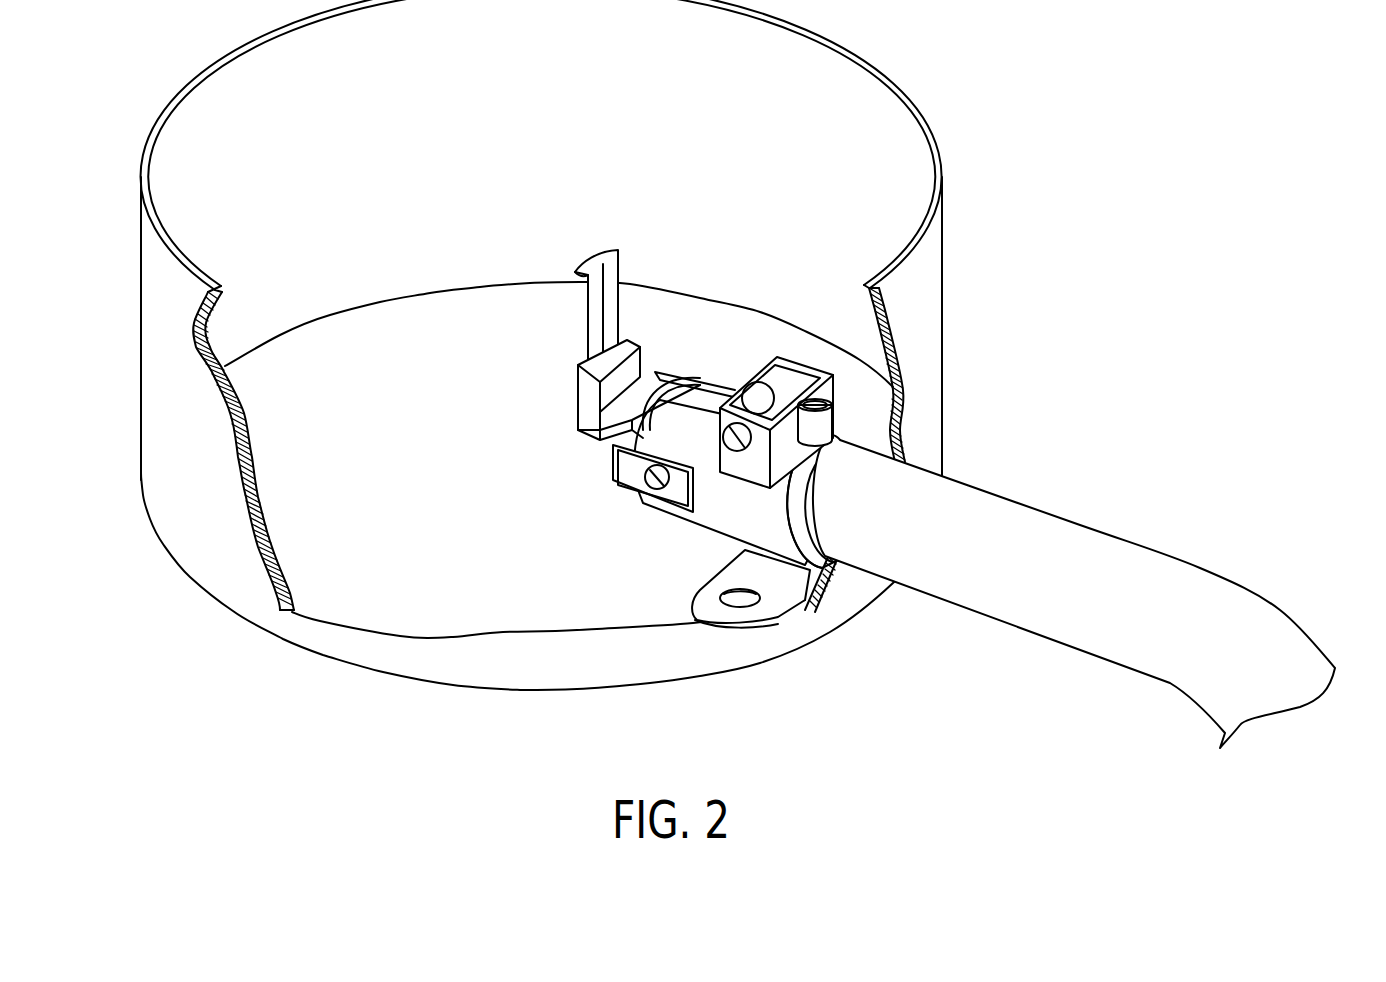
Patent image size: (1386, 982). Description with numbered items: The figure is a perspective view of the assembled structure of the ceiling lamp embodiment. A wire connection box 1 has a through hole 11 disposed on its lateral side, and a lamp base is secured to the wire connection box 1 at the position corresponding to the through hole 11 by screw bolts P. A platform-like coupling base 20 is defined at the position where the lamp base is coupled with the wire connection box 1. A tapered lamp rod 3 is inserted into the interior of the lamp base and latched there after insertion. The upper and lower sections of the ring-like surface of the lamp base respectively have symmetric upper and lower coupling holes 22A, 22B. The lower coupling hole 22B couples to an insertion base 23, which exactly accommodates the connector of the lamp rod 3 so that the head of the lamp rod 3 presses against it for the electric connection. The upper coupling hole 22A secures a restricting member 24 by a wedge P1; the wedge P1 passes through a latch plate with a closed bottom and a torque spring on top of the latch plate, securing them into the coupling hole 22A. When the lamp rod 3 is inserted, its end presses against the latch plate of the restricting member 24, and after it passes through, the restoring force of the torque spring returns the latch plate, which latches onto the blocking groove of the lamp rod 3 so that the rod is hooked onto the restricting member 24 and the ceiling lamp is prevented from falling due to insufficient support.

The wire connection box 1 is at (917, 315).
The through hole 11 is at (903, 457).
The lamp rod 3 is at (1068, 598).
The coupling base 20 is at (783, 575).
The screw bolts P is at (739, 603).
The wedge P1 is at (717, 397).
The upper coupling hole 22A is at (690, 401).
The lower coupling hole 22B is at (657, 493).
The insertion base 23 is at (605, 430).
The restricting member 24 is at (770, 370).